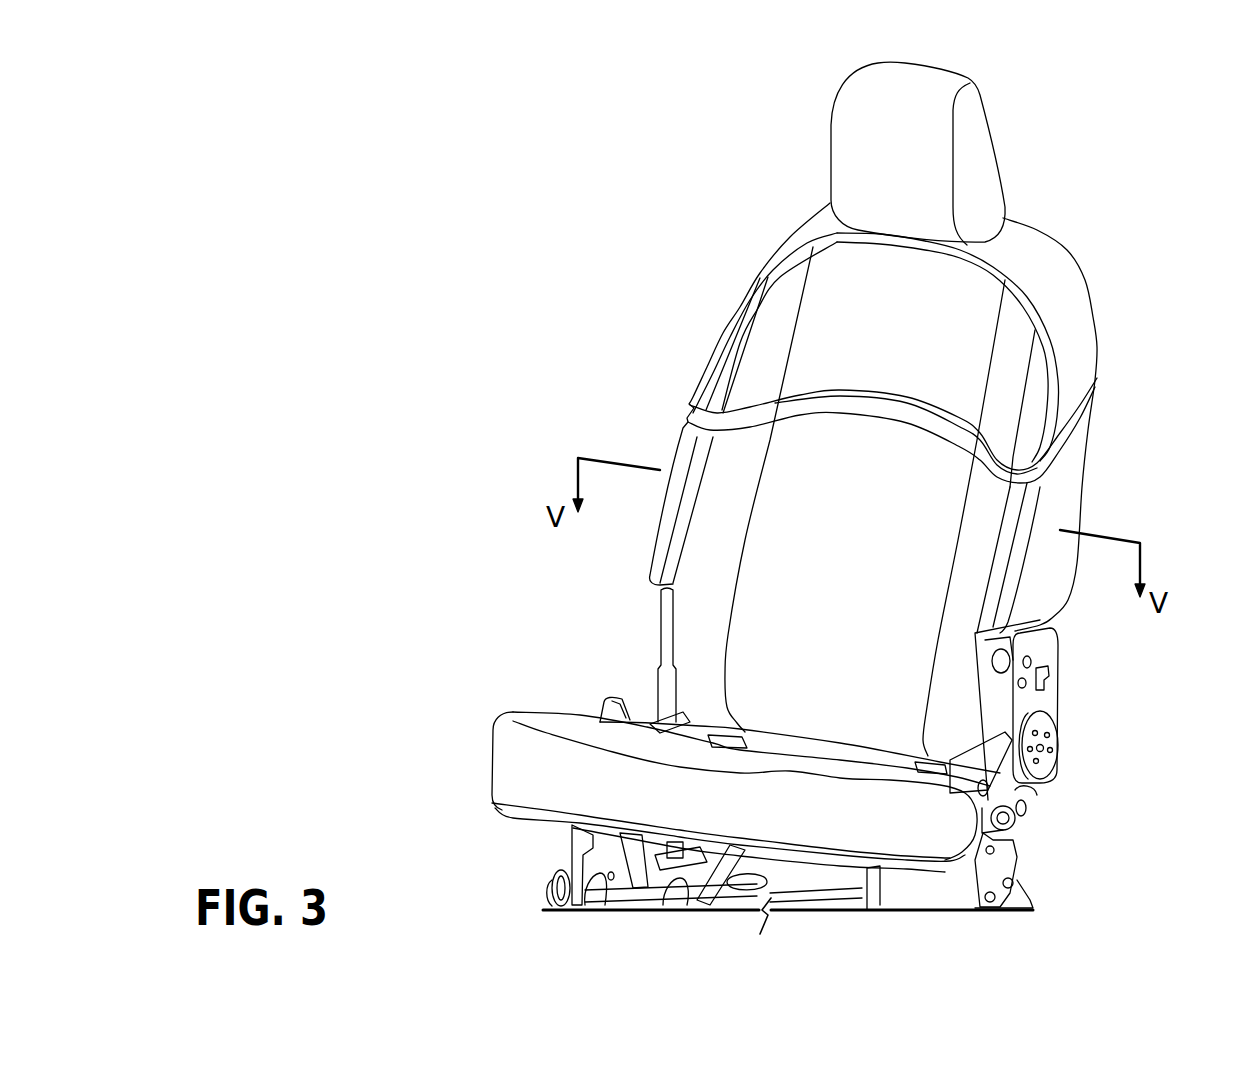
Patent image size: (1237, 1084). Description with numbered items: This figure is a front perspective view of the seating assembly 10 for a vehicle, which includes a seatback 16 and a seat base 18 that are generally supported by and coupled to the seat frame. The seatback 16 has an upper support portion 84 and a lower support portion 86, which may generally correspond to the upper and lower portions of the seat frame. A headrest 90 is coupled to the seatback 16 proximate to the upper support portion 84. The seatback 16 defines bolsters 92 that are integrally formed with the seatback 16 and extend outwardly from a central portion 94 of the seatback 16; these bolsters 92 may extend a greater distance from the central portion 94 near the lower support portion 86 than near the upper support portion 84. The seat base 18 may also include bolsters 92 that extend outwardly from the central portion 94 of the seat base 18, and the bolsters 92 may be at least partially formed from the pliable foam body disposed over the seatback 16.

The seating assembly 10 is at (1065, 173).
The seatback 16 is at (1037, 253).
The seat base 18 is at (513, 767).
The upper support portion 84 is at (1078, 350).
The lower support portion 86 is at (1062, 483).
The headrest 90 is at (863, 142).
The bolsters 92 is at (723, 450).
The central portion 94 is at (808, 315).